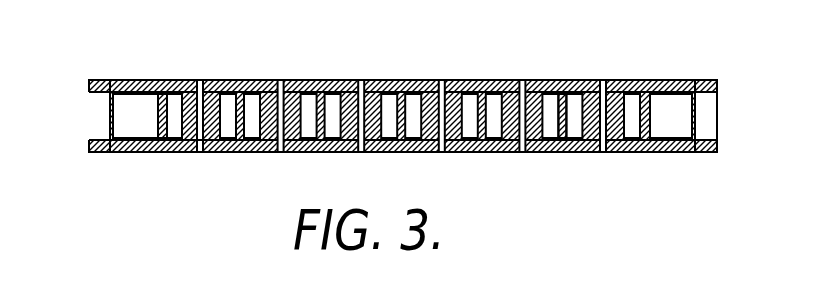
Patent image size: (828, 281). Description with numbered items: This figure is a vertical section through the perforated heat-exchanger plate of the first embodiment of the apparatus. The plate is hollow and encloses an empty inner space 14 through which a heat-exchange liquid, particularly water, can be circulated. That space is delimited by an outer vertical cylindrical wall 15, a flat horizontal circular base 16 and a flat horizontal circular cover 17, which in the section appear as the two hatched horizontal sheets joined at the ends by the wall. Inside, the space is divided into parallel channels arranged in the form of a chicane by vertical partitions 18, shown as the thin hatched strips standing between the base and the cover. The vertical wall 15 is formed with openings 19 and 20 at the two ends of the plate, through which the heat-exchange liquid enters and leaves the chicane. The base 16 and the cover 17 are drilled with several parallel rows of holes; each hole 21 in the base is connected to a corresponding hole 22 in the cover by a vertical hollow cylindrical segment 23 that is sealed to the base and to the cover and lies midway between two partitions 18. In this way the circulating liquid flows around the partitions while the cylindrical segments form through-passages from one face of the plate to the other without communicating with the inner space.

The inner space 14 is at (665, 113).
The outer vertical cylindrical wall 15 is at (717, 138).
The base 16 is at (642, 153).
The cover 17 is at (632, 80).
The vertical partitions 18 is at (562, 117).
The opening 19 is at (703, 110).
The opening 20 is at (98, 107).
The hole in the base 21 is at (200, 153).
The hole in the cover 22 is at (200, 78).
The vertical hollow cylindrical segment 23 is at (173, 113).